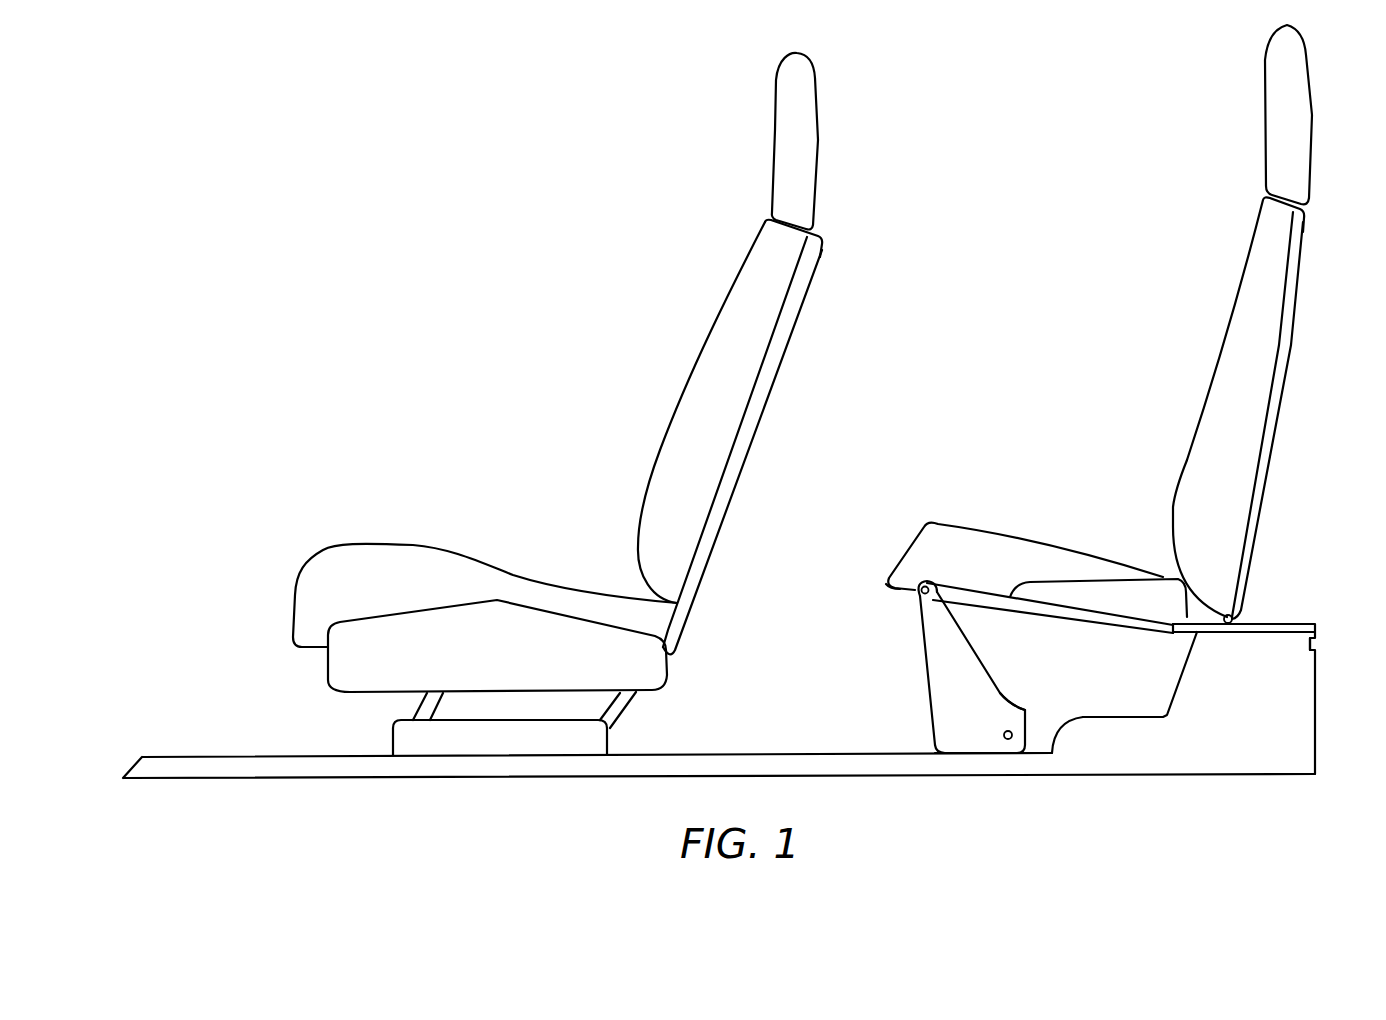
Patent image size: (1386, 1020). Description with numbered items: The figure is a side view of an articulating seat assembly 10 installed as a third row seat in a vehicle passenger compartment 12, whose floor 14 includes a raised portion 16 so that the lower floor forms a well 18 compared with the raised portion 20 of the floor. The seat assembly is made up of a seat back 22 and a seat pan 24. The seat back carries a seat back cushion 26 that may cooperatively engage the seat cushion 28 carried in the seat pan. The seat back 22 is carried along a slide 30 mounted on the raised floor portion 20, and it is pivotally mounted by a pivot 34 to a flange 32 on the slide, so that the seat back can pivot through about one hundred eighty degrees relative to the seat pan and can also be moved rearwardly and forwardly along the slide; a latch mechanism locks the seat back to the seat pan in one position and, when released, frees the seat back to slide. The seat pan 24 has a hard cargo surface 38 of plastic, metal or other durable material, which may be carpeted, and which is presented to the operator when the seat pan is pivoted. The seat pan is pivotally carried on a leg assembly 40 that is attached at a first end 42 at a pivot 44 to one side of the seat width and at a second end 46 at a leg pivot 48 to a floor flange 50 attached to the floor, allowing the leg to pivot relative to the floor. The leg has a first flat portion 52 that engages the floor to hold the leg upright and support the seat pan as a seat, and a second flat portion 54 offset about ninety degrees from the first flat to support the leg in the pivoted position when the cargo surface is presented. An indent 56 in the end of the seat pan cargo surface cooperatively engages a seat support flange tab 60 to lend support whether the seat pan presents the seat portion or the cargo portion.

The seat assembly 10 is at (1186, 157).
The vehicle passenger compartment 12 is at (547, 371).
The vehicle floor 14 is at (782, 753).
The raised portion 16 is at (1262, 622).
The well 18 is at (1095, 512).
The raised portion of the floor 20 is at (1310, 622).
The seat back 22 is at (1300, 292).
The seat pan 24 is at (888, 582).
The seat back cushion 26 is at (1230, 312).
The seat cushion 28 is at (1023, 533).
The slide 30 is at (1280, 645).
The flange 32 is at (1245, 612).
The pivot 34 is at (1215, 615).
The cargo surface 38 is at (1053, 618).
The leg assembly 40 is at (943, 677).
The first end of leg assembly 42 is at (925, 585).
The pivot 44 is at (920, 600).
The second end of leg assembly 46 is at (983, 738).
The leg pivot 48 is at (1013, 733).
The floor flange 50 is at (1032, 745).
The first flat portion 52 is at (970, 755).
The second flat portion 54 is at (1030, 714).
The indent 56 is at (1180, 634).
The seat support flange tab 60 is at (1190, 631).